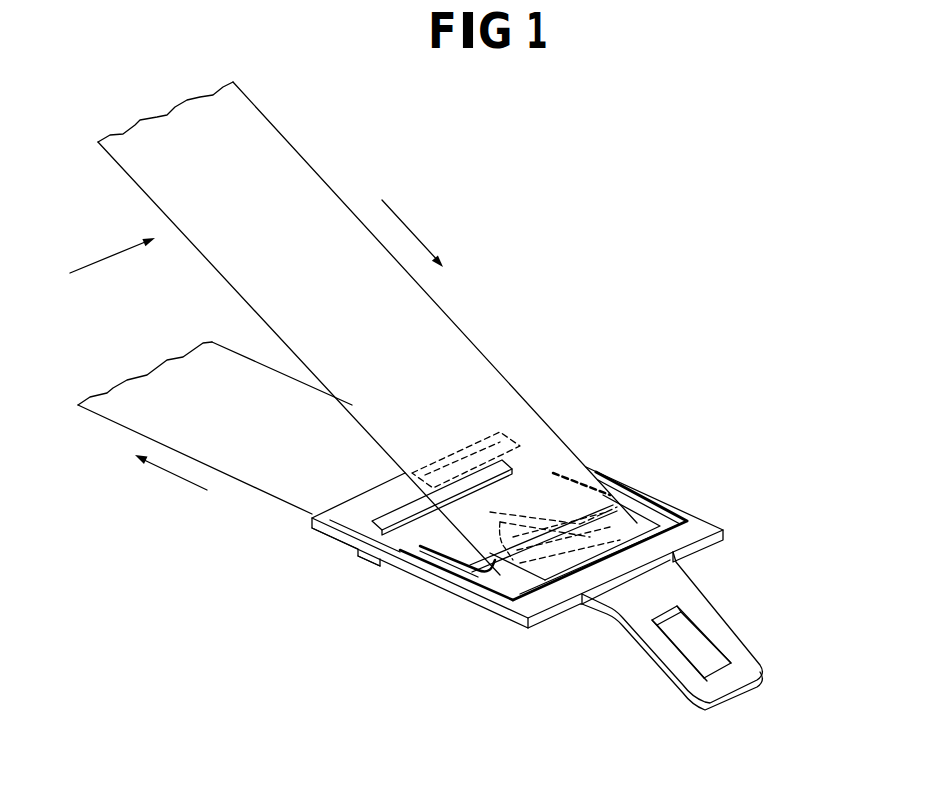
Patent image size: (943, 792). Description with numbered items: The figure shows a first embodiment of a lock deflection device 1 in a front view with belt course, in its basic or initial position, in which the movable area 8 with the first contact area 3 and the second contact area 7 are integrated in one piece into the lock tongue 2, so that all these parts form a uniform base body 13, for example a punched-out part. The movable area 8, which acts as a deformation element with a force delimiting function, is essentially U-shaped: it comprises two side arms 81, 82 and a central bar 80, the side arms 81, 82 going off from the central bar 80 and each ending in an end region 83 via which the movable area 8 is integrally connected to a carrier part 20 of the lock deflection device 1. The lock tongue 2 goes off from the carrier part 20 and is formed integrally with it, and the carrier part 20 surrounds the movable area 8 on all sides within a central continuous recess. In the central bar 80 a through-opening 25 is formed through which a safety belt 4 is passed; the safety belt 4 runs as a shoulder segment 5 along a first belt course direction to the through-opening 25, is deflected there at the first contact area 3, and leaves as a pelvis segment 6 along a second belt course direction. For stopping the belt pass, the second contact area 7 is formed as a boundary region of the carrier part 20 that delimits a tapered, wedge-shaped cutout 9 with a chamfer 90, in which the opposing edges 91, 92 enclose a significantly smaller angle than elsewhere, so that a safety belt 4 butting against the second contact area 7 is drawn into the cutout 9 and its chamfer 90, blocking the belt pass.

The lock deflection device 1 is at (722, 564).
The lock tongue 2 is at (735, 681).
The first contact area 3 is at (553, 555).
The safety belt 4 is at (101, 263).
The shoulder segment 5 is at (432, 330).
The pelvis segment 6 is at (153, 410).
The second contact area 7 is at (600, 500).
The movable area 8 is at (505, 582).
The wedge-shaped cutout 9 is at (519, 550).
The base body 13 is at (484, 625).
The carrier part 20 is at (327, 519).
The through-opening 25 is at (590, 555).
The central bar 80 is at (560, 580).
The side arm 81 is at (640, 516).
The side arm 82 is at (453, 568).
The end region 83 is at (577, 478).
The chamfer 90 is at (518, 515).
The opposing edge 91 is at (500, 518).
The opposing edge 92 is at (527, 515).